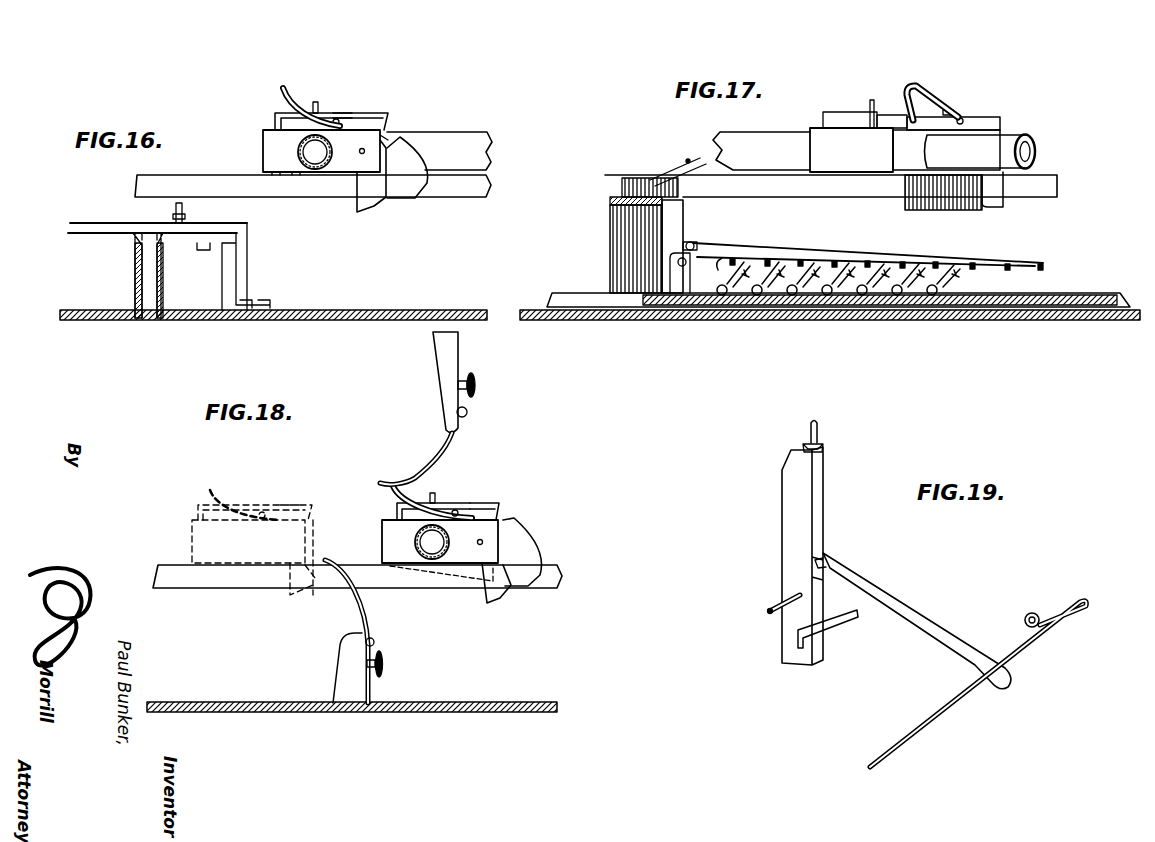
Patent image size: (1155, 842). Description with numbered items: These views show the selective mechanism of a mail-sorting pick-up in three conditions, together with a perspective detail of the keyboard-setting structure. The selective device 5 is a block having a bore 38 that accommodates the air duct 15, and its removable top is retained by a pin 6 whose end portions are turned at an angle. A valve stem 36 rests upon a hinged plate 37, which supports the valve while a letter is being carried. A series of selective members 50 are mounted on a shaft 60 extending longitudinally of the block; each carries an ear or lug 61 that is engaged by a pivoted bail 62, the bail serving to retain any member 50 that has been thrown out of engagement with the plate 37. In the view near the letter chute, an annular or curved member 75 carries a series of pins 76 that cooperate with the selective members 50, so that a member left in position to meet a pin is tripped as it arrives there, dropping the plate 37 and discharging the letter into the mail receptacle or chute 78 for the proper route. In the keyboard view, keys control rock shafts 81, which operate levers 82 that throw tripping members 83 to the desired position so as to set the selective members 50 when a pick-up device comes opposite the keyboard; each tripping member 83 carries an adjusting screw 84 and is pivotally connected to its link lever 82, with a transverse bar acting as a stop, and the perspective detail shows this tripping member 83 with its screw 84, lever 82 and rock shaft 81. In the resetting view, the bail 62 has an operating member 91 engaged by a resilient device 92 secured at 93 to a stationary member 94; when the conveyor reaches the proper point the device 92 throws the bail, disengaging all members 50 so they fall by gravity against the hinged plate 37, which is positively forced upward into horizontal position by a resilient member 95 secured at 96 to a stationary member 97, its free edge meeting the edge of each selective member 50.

In FIG. 16, the selective device 5 is at (263, 142).
In FIG. 17, the selective device 5 is at (851, 150).
In FIG. 18, the selective device 5 is at (385, 530).
In FIG. 16, the pin 6 is at (277, 113).
In FIG. 17, the pin 6 is at (863, 117).
In FIG. 18, the pin 6 is at (200, 508).
In FIG. 16, the air duct 15 is at (466, 136).
In FIG. 17, the air duct 15 is at (737, 136).
In FIG. 16, the stem 36 is at (319, 104).
In FIG. 17, the stem 36 is at (873, 100).
In FIG. 18, the stem 36 is at (437, 503).
In FIG. 16, the hinged plate 37 is at (313, 185).
In FIG. 17, the hinged plate 37 is at (890, 176).
In FIG. 18, the hinged plate 37 is at (470, 584).
In FIG. 16, the bore 38 is at (322, 155).
In FIG. 18, the bore 38 is at (441, 545).
In FIG. 16, the selective member 50 is at (370, 205).
In FIG. 17, the selective member 50 is at (990, 205).
In FIG. 18, the selective member 50 is at (506, 598).
In FIG. 16, the shaft 60 is at (366, 149).
In FIG. 18, the shaft 60 is at (285, 548).
In FIG. 16, the ear or lug 61 is at (390, 137).
In FIG. 18, the ear or lug 61 is at (500, 521).
In FIG. 16, the pivoted bail 62 is at (386, 119).
In FIG. 17, the pivoted bail 62 is at (993, 117).
In FIG. 18, the pivoted bail 62 is at (500, 504).
In FIG. 16, the annular or curved member 75 is at (113, 223).
In FIG. 16, the pins 76 is at (183, 212).
In FIG. 16, the mail receptacle or chute 78 is at (158, 291).
In FIG. 17, the rock shaft 81 is at (816, 250).
In FIG. 19, the rock shaft 81 is at (952, 710).
In FIG. 17, the lever 82 is at (780, 250).
In FIG. 19, the lever 82 is at (913, 621).
In FIG. 17, the tripping member 83 is at (690, 203).
In FIG. 19, the tripping member 83 is at (823, 479).
In FIG. 19, the adjusting device or screw 84 is at (818, 427).
In FIG. 16, the operating member 91 is at (290, 92).
In FIG. 17, the operating member 91 is at (918, 92).
In FIG. 18, the operating member 91 is at (430, 489).
In FIG. 18, the resilient device 92 is at (443, 455).
In FIG. 18, the securing point 93 is at (468, 412).
In FIG. 18, the stationary member 94 is at (455, 360).
In FIG. 18, the resilient member 95 is at (366, 608).
In FIG. 18, the securing point 96 is at (375, 643).
In FIG. 18, the stationary member 97 is at (367, 693).